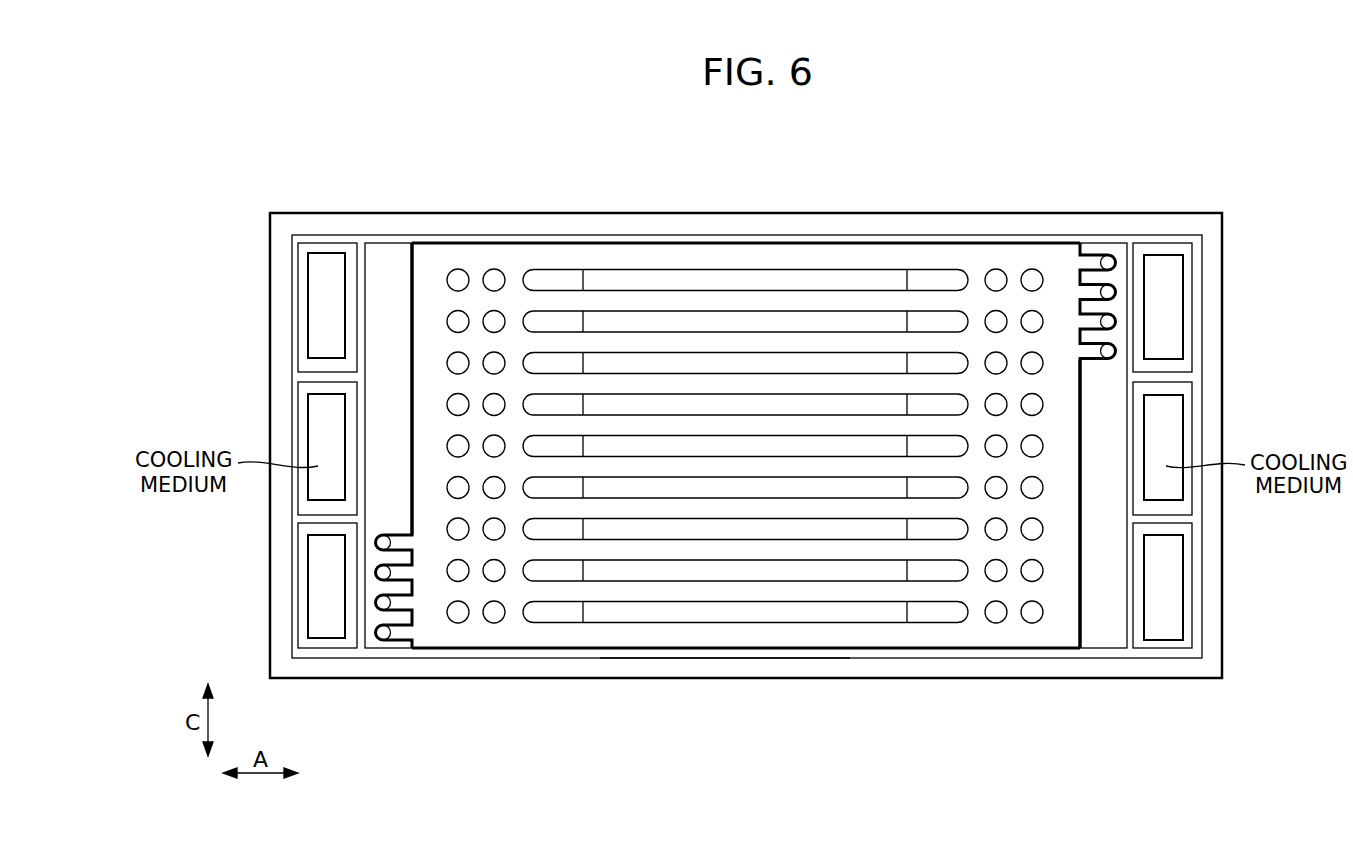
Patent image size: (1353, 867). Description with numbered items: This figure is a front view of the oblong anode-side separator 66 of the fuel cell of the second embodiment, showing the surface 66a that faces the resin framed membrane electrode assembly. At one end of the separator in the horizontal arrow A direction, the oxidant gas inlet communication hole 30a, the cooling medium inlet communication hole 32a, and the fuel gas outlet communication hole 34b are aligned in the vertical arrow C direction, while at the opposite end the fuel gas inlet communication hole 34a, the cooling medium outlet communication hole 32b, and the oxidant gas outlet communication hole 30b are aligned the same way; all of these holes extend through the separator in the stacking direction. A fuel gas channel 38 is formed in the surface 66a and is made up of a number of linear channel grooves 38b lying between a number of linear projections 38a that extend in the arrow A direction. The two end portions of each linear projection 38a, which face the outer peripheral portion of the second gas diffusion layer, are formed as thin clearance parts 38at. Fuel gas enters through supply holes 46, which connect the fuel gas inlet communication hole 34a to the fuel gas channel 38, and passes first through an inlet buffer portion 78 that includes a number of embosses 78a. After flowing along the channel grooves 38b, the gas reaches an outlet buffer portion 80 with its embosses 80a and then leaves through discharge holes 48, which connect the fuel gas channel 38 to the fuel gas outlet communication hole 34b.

The anode-side separator 66 is at (859, 123).
The surface of the anode-side separator 66a is at (722, 663).
The oxidant gas inlet communication hole 30a is at (326, 253).
The oxidant gas outlet communication hole 30b is at (1164, 535).
The cooling medium inlet communication hole 32a is at (326, 394).
The cooling medium outlet communication hole 32b is at (1164, 395).
The fuel gas inlet communication hole 34a is at (1164, 255).
The fuel gas outlet communication hole 34b is at (326, 535).
The fuel gas channel 38 is at (746, 438).
The linear projection 38a is at (612, 322).
The linear channel groove 38b is at (678, 345).
The thin clearance part 38at is at (944, 321).
The supply hole 46 is at (1108, 291).
The discharge hole 48 is at (383, 603).
The inlet buffer portion 78 is at (1053, 297).
The emboss of the inlet buffer portion 78a is at (1030, 621).
The outlet buffer portion 80 is at (434, 600).
The emboss of the outlet buffer portion 80a is at (458, 272).